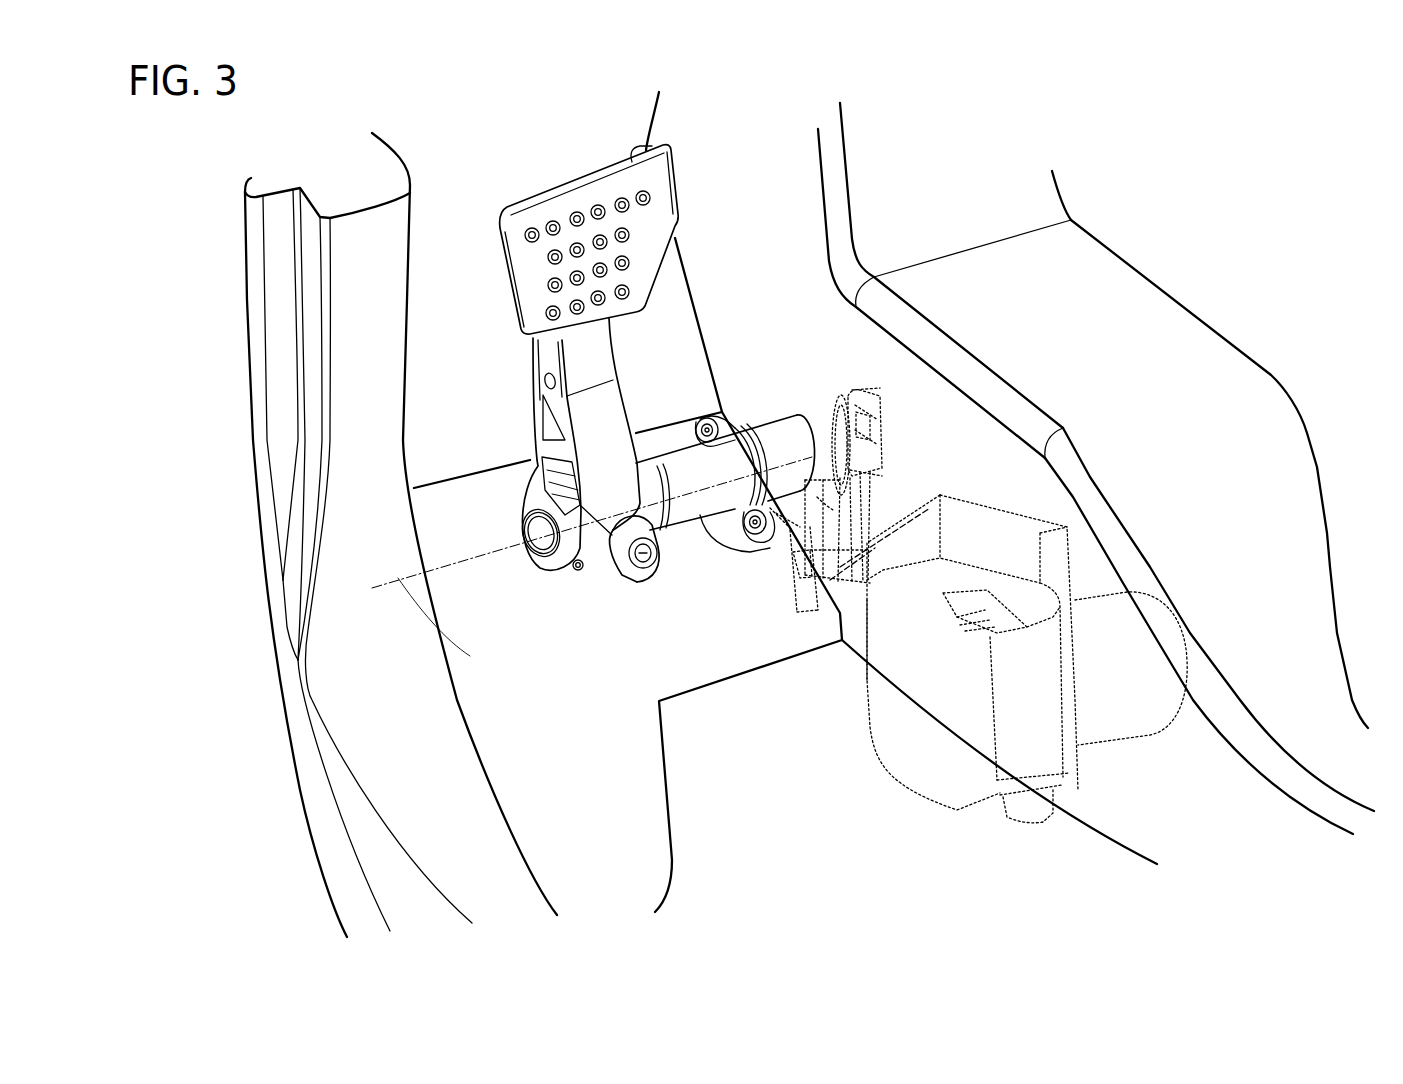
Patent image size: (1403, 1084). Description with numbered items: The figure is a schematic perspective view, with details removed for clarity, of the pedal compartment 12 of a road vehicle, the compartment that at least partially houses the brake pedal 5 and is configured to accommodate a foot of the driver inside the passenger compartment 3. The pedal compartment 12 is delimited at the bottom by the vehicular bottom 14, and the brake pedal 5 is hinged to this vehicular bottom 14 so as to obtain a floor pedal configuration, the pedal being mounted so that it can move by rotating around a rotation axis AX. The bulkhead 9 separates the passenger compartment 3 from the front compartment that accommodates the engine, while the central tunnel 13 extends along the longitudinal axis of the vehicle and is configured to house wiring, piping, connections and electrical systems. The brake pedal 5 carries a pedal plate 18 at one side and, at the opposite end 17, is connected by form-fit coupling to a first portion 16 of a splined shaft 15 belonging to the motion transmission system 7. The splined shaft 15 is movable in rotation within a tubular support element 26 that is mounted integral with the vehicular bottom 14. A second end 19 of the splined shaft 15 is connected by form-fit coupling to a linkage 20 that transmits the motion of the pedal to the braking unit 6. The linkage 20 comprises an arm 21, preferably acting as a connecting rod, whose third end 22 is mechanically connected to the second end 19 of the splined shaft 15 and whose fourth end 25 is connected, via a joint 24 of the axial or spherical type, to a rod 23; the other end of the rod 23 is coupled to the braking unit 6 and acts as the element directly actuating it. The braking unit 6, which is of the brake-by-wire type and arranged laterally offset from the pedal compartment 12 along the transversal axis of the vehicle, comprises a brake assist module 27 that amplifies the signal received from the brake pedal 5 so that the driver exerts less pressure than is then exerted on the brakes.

The passenger compartment 3 is at (1194, 175).
The brake pedal 5 is at (522, 416).
The braking unit 6 is at (933, 812).
The motion transmission system 7 is at (755, 403).
The bulkhead 9 is at (670, 293).
The pedal compartment 12 is at (505, 686).
The central tunnel 13 is at (1101, 326).
The vehicular bottom 14 is at (438, 537).
The splined shaft 15 is at (530, 523).
The first portion 16 is at (548, 545).
The end 17 is at (598, 568).
The pedal plate 18 is at (557, 205).
The second end 19 is at (812, 413).
The linkage 20 is at (897, 427).
The arm 21 is at (870, 480).
The third end 22 is at (876, 393).
The rod 23 is at (840, 590).
The joint 24 is at (800, 556).
The fourth end 25 is at (797, 598).
The tubular support element 26 is at (668, 470).
The brake assist module 27 is at (893, 723).
The rotation axis AX is at (476, 667).